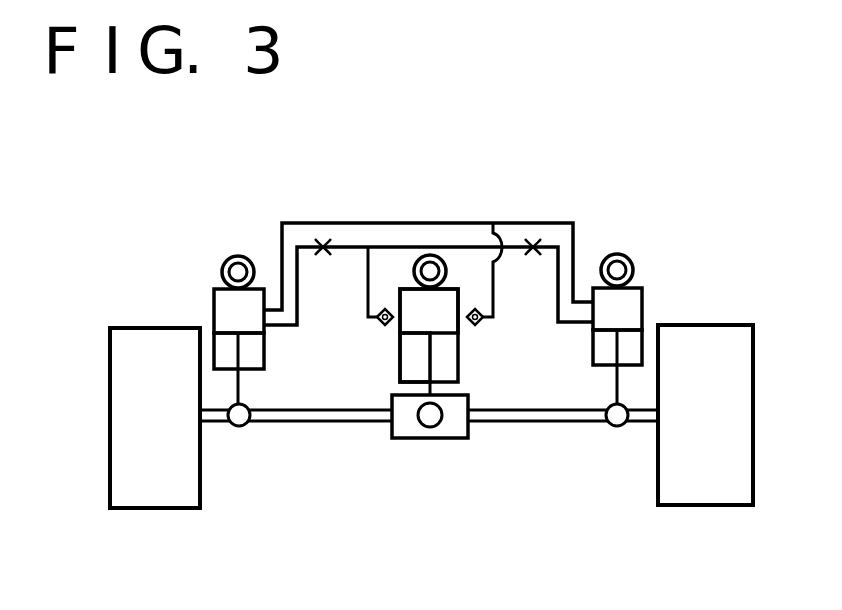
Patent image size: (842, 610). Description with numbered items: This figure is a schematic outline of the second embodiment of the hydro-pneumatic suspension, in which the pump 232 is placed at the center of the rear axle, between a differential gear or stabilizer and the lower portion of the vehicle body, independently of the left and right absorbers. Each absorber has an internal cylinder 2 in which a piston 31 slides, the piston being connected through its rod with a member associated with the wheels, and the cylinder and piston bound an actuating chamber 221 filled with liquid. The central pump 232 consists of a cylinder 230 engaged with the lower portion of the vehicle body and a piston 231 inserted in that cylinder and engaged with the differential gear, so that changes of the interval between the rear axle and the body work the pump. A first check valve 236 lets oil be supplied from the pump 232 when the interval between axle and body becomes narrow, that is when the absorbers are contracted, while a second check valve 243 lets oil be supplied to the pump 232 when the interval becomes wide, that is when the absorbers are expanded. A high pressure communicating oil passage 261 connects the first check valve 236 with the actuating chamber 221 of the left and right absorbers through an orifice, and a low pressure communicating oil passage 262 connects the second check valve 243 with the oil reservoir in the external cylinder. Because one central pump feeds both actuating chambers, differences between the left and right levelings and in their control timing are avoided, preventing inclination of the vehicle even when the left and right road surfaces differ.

The internal cylinder 2 is at (417, 307).
The actuating chamber 221 is at (243, 310).
The piston 31 is at (243, 335).
The high pressure communicating oil passage 261 is at (397, 243).
The low pressure communicating oil passage 262 is at (433, 220).
The cylinder 230 is at (452, 417).
The piston 231 is at (420, 337).
The pump 232 is at (420, 315).
The first check valve 236 is at (380, 320).
The second check valve 243 is at (482, 322).